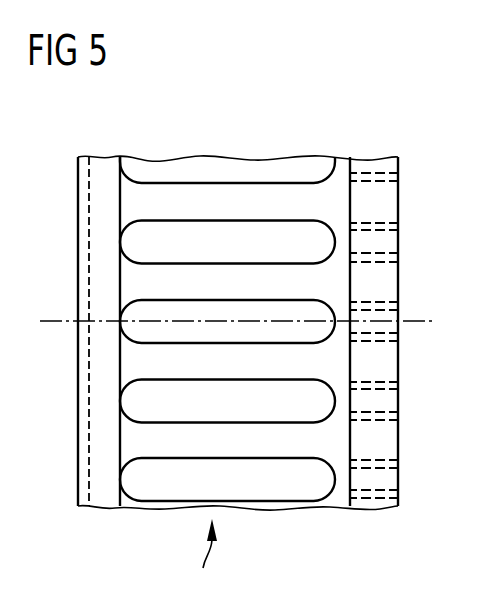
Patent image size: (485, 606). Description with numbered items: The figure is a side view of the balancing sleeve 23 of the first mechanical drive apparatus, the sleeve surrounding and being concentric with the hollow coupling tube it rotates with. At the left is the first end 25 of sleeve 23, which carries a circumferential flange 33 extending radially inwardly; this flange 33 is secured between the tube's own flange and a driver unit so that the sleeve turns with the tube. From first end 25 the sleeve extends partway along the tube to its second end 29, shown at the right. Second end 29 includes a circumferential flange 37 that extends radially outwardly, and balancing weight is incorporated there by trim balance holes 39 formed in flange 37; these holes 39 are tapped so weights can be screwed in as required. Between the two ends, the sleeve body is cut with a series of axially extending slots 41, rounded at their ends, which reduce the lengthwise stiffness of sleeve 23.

The balancing sleeve 23 is at (203, 559).
The first end of sleeve 25 is at (103, 168).
The second end of sleeve 29 is at (390, 440).
The circumferential flange 33 is at (87, 481).
The circumferential flange 37 is at (390, 362).
The trim balance holes 39 is at (378, 251).
The axially extending slots 41 is at (262, 412).